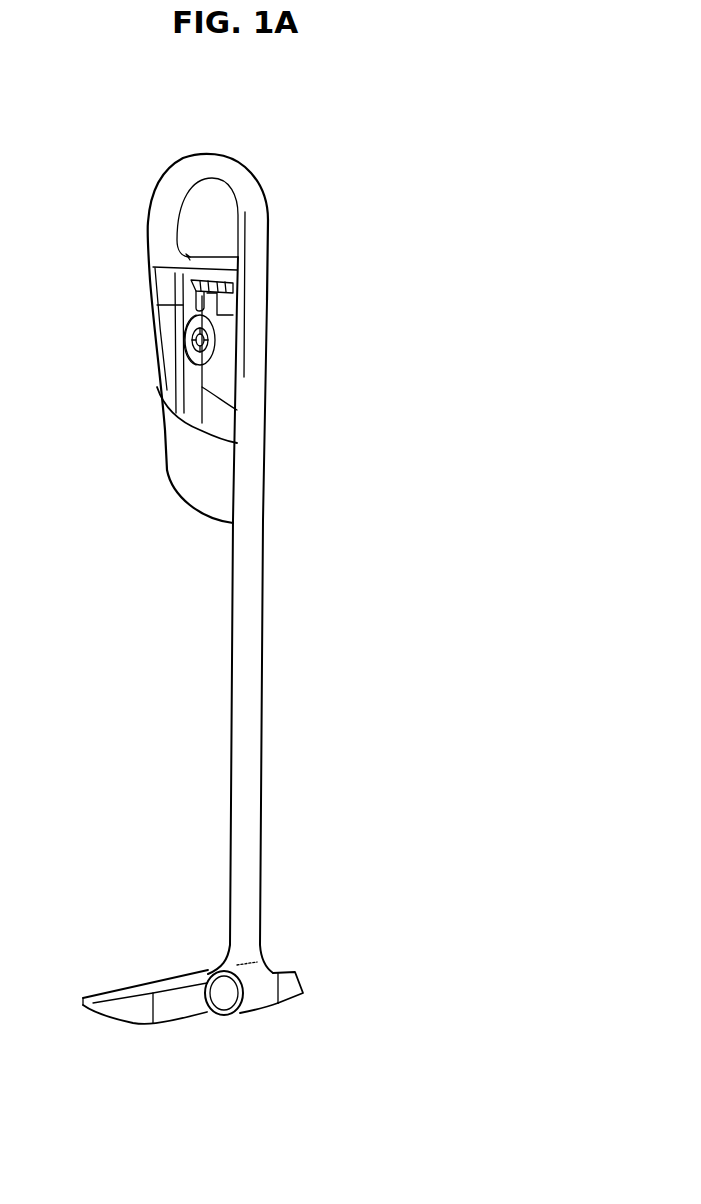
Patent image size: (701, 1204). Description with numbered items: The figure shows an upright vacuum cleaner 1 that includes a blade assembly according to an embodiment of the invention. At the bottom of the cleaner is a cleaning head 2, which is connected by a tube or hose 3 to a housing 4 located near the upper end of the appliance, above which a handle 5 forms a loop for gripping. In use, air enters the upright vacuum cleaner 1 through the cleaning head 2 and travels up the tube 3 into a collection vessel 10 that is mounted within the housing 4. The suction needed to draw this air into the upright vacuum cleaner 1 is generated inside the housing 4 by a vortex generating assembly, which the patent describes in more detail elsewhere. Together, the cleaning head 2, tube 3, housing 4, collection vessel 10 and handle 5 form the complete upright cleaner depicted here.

The upright vacuum cleaner 1 is at (333, 241).
The cleaning head 2 is at (113, 1010).
The tube 3 is at (252, 649).
The housing 4 is at (187, 463).
The handle 5 is at (247, 192).
The collection vessel 10 is at (176, 352).